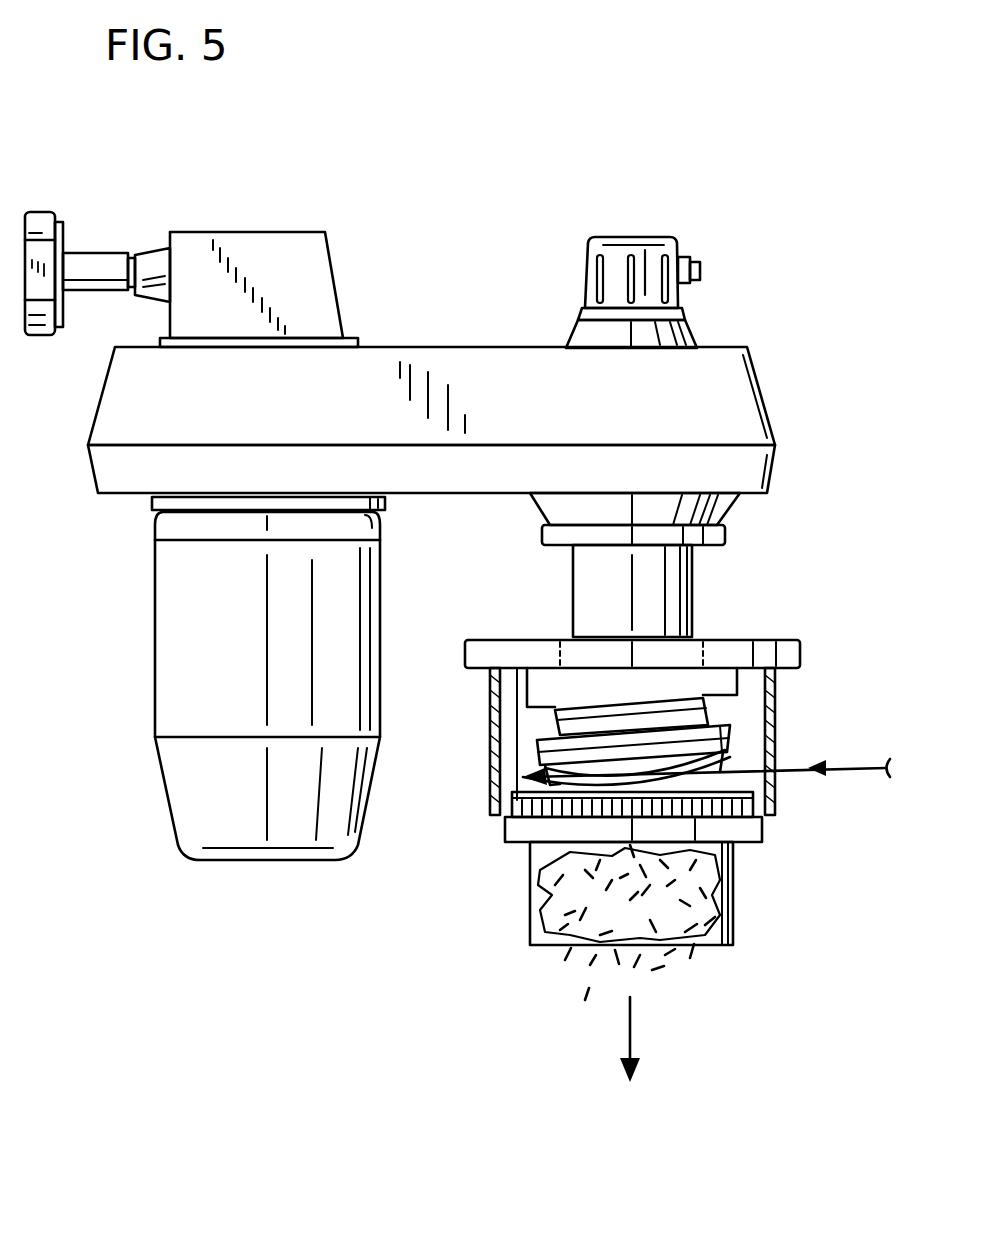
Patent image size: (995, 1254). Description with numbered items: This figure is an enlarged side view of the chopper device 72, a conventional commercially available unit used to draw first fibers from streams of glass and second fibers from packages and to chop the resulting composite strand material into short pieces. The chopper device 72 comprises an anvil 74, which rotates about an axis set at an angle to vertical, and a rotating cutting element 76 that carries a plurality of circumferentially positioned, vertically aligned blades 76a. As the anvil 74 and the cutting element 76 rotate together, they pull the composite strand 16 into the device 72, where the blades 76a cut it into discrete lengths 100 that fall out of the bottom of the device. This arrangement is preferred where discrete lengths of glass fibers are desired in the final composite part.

The chopper device 72 is at (670, 703).
The anvil 74 is at (737, 730).
The rotating cutting element 76 is at (494, 810).
The blades 76a is at (710, 800).
The product material 16 is at (850, 768).
The discrete lengths 100 is at (684, 962).